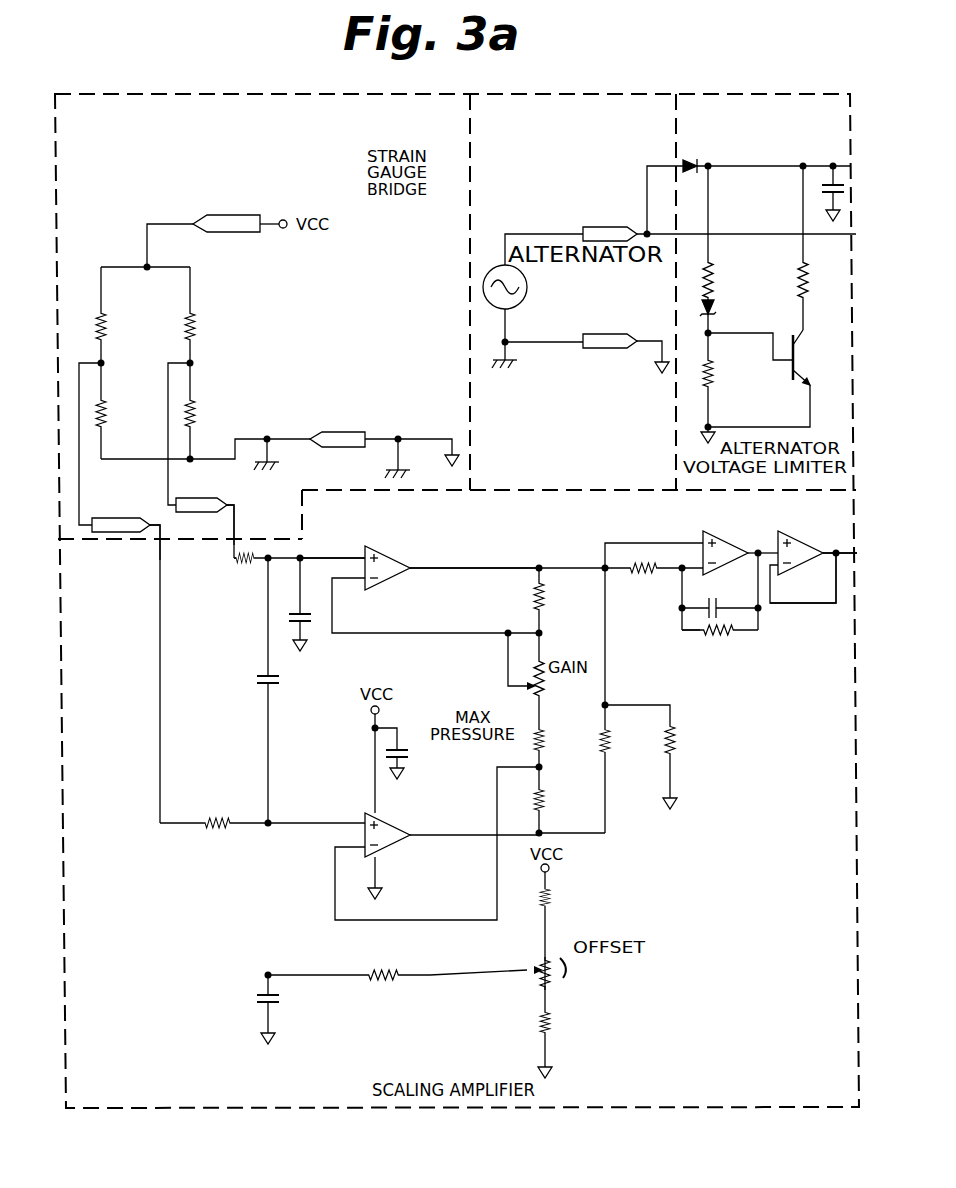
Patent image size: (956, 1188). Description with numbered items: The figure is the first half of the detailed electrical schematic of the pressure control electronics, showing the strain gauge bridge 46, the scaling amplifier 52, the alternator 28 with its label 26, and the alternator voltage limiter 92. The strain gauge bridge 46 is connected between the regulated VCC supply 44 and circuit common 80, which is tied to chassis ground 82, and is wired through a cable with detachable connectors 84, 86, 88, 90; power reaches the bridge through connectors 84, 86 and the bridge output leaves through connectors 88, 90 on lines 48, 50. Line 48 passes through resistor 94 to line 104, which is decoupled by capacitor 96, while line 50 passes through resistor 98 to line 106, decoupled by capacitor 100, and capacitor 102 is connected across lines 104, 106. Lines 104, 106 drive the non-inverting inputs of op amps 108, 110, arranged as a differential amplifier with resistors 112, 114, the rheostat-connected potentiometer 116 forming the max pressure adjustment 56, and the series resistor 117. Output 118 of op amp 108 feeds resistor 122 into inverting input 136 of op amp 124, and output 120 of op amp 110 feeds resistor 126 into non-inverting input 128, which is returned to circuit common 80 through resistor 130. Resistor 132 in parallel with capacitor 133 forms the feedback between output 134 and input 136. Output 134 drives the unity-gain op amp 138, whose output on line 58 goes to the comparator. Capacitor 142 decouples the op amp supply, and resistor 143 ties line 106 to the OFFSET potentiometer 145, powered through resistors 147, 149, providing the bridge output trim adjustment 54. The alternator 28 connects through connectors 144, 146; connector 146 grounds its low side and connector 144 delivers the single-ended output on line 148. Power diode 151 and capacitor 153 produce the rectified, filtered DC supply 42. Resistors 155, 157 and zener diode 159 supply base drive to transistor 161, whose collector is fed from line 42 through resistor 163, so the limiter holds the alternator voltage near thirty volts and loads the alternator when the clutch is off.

The alternator 26 is at (530, 232).
The alternator 28 is at (515, 300).
The DC supply 42 is at (735, 166).
The regulated VCC supply 44 is at (281, 228).
The strain gauge bridge 46 is at (292, 174).
The line 48 is at (238, 526).
The line 50 is at (163, 524).
The scaling amplifier 52 is at (580, 1094).
The bridge output trim adjustment 54 is at (600, 930).
The max pressure adjustment 56 is at (498, 697).
The output 58 is at (832, 572).
The circuit common 80 is at (450, 462).
The chassis ground 82 is at (385, 476).
The detachable connector 84 is at (222, 232).
The detachable connector 86 is at (340, 432).
The detachable connector 88 is at (222, 498).
The detachable connector 90 is at (124, 518).
The alternator voltage limiter 92 is at (800, 428).
The resistor 94 is at (249, 566).
The capacitor 96 is at (308, 612).
The resistor 98 is at (222, 820).
The capacitor 100 is at (280, 994).
The capacitor 102 is at (280, 672).
The line 104 is at (324, 558).
The line 106 is at (302, 822).
The operational amplifier 108 is at (385, 545).
The operational amplifier 110 is at (398, 822).
The resistor 112 is at (535, 598).
The resistor 114 is at (548, 802).
The rheostat-connected potentiometer 116 is at (545, 690).
The resistor 117 is at (548, 746).
The output 118 is at (480, 567).
The output 120 is at (430, 835).
The resistor 122 is at (632, 574).
The operational amplifier 124 is at (722, 542).
The resistor 126 is at (610, 742).
The non-inverting input 128 is at (640, 543).
The resistor 130 is at (680, 740).
The resistor 132 is at (722, 634).
The capacitor 133 is at (720, 591).
The output 134 is at (762, 542).
The inverting input 136 is at (698, 636).
The operational amplifier 138 is at (803, 547).
The capacitor 142 is at (410, 752).
The resistor 143 is at (405, 968).
The detachable connector 144 is at (605, 228).
The OFFSET potentiometer 145 is at (556, 975).
The detachable connector 146 is at (600, 350).
The resistor 147 is at (548, 906).
The line 148 is at (647, 180).
The resistor 149 is at (548, 1022).
The power diode 151 is at (690, 160).
The capacitor 153 is at (833, 180).
The resistor 155 is at (712, 275).
The resistor 157 is at (712, 378).
The zener diode 159 is at (714, 308).
The transistor 161 is at (797, 350).
The resistor 163 is at (808, 285).